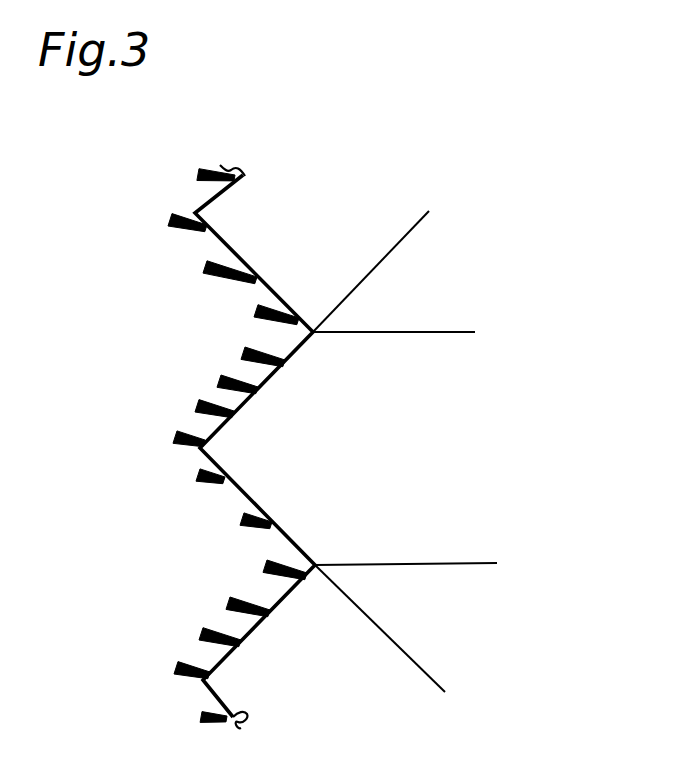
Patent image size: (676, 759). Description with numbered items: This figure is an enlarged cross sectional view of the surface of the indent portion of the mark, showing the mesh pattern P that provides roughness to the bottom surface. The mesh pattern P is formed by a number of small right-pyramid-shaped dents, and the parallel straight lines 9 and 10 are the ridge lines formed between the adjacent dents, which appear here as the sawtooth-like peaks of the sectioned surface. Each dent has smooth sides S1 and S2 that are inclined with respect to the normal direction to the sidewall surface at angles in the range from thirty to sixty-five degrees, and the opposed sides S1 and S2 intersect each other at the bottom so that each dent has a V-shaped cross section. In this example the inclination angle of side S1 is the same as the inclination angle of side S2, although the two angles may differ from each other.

The parallel straight line 9 is at (335, 446).
The parallel straight line 10 is at (255, 446).
The smooth side S1 is at (299, 350).
The smooth side S2 is at (300, 541).
The mesh pattern P is at (540, 320).